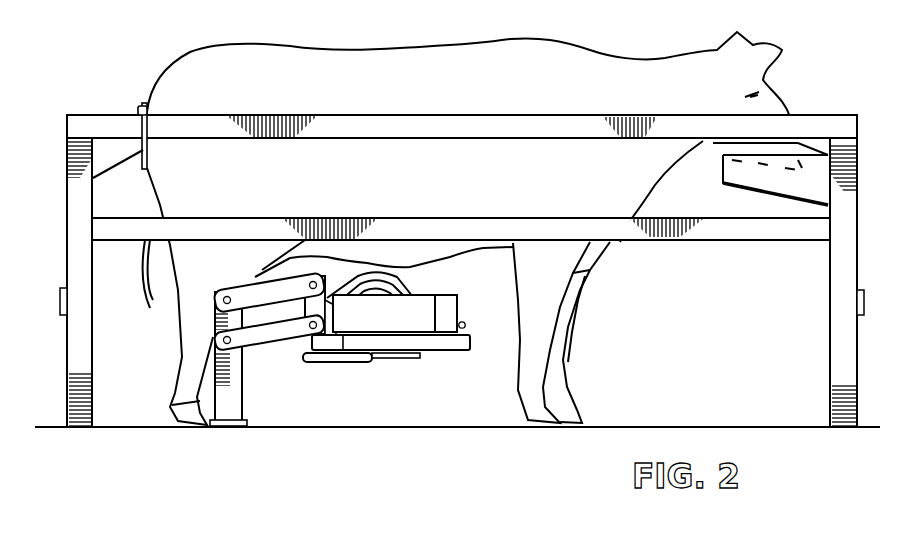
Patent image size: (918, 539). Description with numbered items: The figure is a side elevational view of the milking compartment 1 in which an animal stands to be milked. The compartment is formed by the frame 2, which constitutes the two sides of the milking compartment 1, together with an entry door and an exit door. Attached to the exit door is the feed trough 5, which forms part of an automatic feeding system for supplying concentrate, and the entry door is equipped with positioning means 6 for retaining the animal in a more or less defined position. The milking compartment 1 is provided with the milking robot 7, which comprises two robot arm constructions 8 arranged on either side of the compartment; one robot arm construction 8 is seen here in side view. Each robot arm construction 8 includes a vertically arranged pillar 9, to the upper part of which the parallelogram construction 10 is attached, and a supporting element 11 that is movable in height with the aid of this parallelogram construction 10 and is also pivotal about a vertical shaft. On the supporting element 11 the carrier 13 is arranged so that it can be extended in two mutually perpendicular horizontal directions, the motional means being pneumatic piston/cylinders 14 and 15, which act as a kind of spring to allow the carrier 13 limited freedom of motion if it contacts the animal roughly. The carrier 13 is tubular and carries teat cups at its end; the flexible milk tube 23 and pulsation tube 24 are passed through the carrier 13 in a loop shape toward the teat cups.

The milking compartment 1 is at (650, 327).
The frame 2 is at (423, 227).
The feed trough 5 is at (723, 181).
The positioning means 6 is at (133, 162).
The milking robot 7 is at (360, 333).
The robot arm construction 8 is at (284, 356).
The pillar 9 is at (228, 404).
The parallelogram construction 10 is at (277, 292).
The supporting element 11 is at (452, 350).
The carrier 13 is at (442, 297).
The pneumatic piston/cylinder 14 is at (466, 325).
The pneumatic piston/cylinder 15 is at (334, 363).
The milk tube 23 is at (387, 252).
The pulsation tube 24 is at (370, 290).